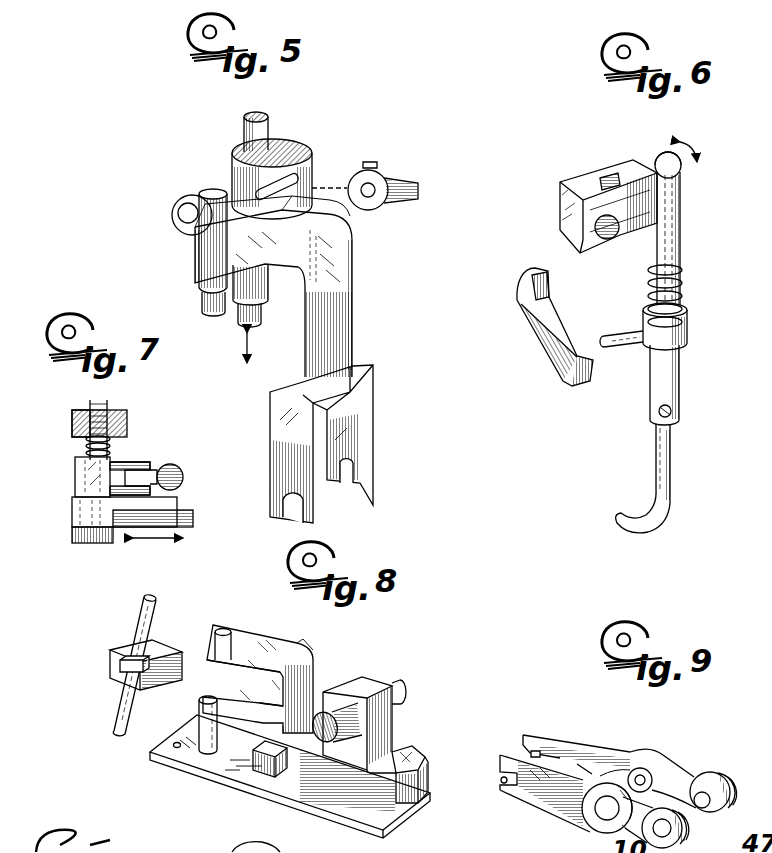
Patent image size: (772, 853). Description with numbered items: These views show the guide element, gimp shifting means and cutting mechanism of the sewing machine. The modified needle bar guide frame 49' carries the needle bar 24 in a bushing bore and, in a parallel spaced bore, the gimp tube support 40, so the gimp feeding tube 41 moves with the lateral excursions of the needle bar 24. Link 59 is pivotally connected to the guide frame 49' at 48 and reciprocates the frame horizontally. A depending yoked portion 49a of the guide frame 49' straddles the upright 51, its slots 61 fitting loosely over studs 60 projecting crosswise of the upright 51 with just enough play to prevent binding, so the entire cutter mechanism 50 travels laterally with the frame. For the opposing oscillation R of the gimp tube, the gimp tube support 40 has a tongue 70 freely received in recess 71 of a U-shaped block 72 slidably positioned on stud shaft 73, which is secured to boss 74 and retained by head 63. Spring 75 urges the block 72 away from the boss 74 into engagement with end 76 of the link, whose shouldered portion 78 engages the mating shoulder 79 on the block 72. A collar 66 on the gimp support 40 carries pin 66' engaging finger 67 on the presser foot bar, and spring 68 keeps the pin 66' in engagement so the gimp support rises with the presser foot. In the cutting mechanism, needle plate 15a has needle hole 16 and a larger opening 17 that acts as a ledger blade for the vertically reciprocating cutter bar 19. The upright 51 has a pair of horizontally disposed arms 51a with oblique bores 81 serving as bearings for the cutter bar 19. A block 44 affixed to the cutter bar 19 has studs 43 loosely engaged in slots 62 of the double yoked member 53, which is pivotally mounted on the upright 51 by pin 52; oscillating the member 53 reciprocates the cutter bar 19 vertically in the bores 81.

In FIG. 5, the pivotal connection 48 is at (282, 168).
In FIG. 5, the link 59 is at (400, 181).
In FIG. 5, the needle bar guide frame 49' is at (295, 286).
In FIG. 5, the depending yoked portion 49a is at (368, 422).
In FIG. 5, the slots 61 is at (347, 484).
In FIG. 5, the gimp tube support 40 is at (208, 312).
In FIG. 6, the gimp tube support 40 is at (672, 253).
In FIG. 7, the gimp tube support 40 is at (184, 477).
In FIG. 5, the needle bar 24 is at (254, 318).
In FIG. 6, the tongue 70 is at (660, 166).
In FIG. 7, the tongue 70 is at (150, 468).
In FIG. 6, the opposing oscillation R is at (698, 150).
In FIG. 6, the recess 71 is at (611, 178).
In FIG. 6, the U-shaped block 72 is at (570, 193).
In FIG. 7, the U-shaped block 72 is at (78, 473).
In FIG. 6, the mating shoulder 79 is at (612, 242).
In FIG. 6, the spring 68 is at (683, 300).
In FIG. 6, the collar 66 is at (688, 329).
In FIG. 6, the pin 66' is at (620, 367).
In FIG. 6, the finger 67 is at (570, 374).
In FIG. 6, the gimp feeding tube 41 is at (670, 456).
In FIG. 7, the stud shaft 73 is at (110, 422).
In FIG. 7, the boss 74 is at (76, 428).
In FIG. 7, the spring 75 is at (112, 447).
In FIG. 7, the shouldered portion 78 is at (108, 511).
In FIG. 7, the end of link 76 is at (72, 513).
In FIG. 7, the head 63 is at (80, 540).
In FIG. 8, the cutter bar 19 is at (120, 706).
In FIG. 8, the studs 43 is at (120, 668).
In FIG. 8, the block 44 is at (168, 683).
In FIG. 8, the needle plate 15a is at (232, 765).
In FIG. 8, the needle hole 16 is at (174, 750).
In FIG. 8, the opening 17 is at (201, 753).
In FIG. 8, the oblique bores 81 is at (208, 696).
In FIG. 8, the upright 51 is at (307, 664).
In FIG. 8, the horizontally disposed arms 51a is at (252, 668).
In FIG. 8, the cutter mechanism 50 is at (385, 752).
In FIG. 8, the pin 52 is at (340, 704).
In FIG. 8, the studs 60 is at (275, 778).
In FIG. 9, the double yoked member 53 is at (680, 773).
In FIG. 9, the slots 62 is at (536, 752).